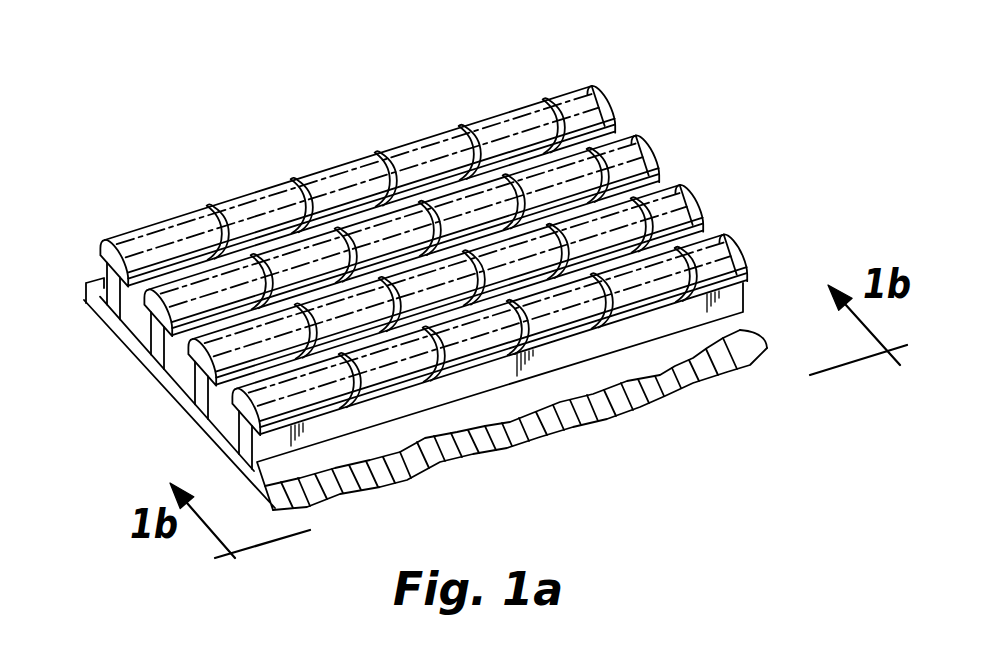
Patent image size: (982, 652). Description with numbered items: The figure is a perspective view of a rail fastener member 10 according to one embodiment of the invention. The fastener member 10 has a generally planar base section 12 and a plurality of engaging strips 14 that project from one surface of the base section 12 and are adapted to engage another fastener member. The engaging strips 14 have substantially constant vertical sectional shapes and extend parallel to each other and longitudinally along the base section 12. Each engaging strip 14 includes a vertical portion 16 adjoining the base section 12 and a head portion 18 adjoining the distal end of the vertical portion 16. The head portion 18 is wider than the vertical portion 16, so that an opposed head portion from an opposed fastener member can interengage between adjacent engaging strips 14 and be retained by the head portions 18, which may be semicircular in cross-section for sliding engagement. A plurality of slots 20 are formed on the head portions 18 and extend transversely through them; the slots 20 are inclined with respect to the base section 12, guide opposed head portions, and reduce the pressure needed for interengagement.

The fastener member 10 is at (290, 100).
The base section 12 is at (742, 330).
The engaging strips 14 is at (660, 140).
The vertical portion 16 is at (160, 336).
The head portion 18 is at (233, 418).
The slots 20 is at (500, 180).